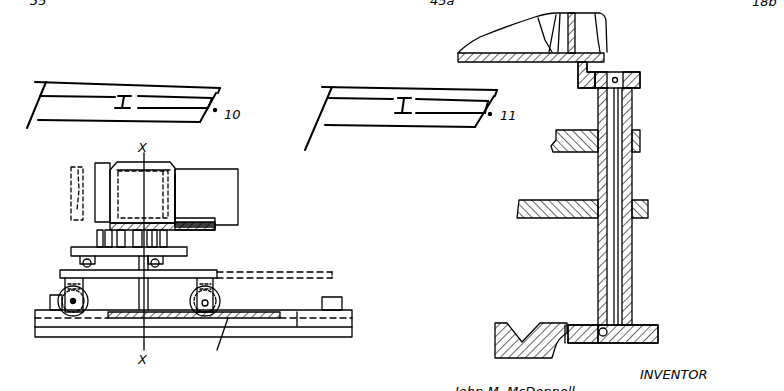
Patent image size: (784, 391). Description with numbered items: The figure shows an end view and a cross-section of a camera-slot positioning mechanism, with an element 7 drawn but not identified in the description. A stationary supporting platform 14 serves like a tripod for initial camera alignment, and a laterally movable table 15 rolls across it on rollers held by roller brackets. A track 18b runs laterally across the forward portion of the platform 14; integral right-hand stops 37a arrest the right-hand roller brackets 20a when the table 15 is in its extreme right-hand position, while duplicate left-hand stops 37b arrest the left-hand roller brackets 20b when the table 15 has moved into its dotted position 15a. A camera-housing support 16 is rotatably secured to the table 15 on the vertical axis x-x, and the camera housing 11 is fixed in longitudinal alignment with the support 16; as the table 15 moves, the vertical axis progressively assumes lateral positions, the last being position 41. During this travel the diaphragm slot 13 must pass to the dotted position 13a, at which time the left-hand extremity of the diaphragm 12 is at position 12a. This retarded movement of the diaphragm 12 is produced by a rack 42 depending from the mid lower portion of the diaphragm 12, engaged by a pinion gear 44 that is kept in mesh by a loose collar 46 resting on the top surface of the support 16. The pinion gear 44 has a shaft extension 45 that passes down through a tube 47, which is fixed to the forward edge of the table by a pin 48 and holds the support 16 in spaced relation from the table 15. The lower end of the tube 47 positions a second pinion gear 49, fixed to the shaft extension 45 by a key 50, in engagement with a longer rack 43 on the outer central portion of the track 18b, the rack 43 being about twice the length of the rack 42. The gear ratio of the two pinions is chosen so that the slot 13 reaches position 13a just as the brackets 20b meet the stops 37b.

In FIG. 10, the ski 7 is at (152, 180).
In FIG. 11, the ski 7 is at (598, 30).
In FIG. 10, the camera housing 11 is at (103, 164).
In FIG. 10, the diaphragm 12 is at (200, 171).
In FIG. 10, the diaphragm position 12a is at (70, 192).
In FIG. 10, the diaphragm slot 13 is at (176, 198).
In FIG. 10, the diaphragm slot position 13a is at (121, 203).
In FIG. 10, the supporting platform 14 is at (280, 334).
In FIG. 10, the laterally movable table 15 is at (206, 272).
In FIG. 11, the laterally movable table 15 is at (540, 201).
In FIG. 10, the table position 15a is at (310, 271).
In FIG. 10, the camera-housing support 16 is at (186, 250).
In FIG. 11, the camera-housing support 16 is at (575, 152).
In FIG. 10, the track 18b is at (297, 324).
In FIG. 11, the track 18b is at (497, 341).
In FIG. 10, the right-hand roller brackets 20a is at (64, 284).
In FIG. 10, the left-hand roller brackets 20b is at (214, 290).
In FIG. 10, the right-hand stops 37a is at (52, 296).
In FIG. 10, the left-hand stops 37b is at (332, 299).
In FIG. 10, the vertical axis position 41 is at (217, 214).
In FIG. 11, the rack 42 is at (600, 61).
In FIG. 10, the rack 43 is at (206, 343).
In FIG. 11, the rack 43 is at (586, 296).
In FIG. 11, the pinion gear 44 is at (631, 73).
In FIG. 11, the shaft extension 45 is at (612, 182).
In FIG. 11, the loose collar 46 is at (634, 100).
In FIG. 11, the tube 47 is at (633, 266).
In FIG. 11, the pin 48 is at (647, 201).
In FIG. 11, the pinion gear 49 is at (646, 325).
In FIG. 11, the key 50 is at (602, 337).